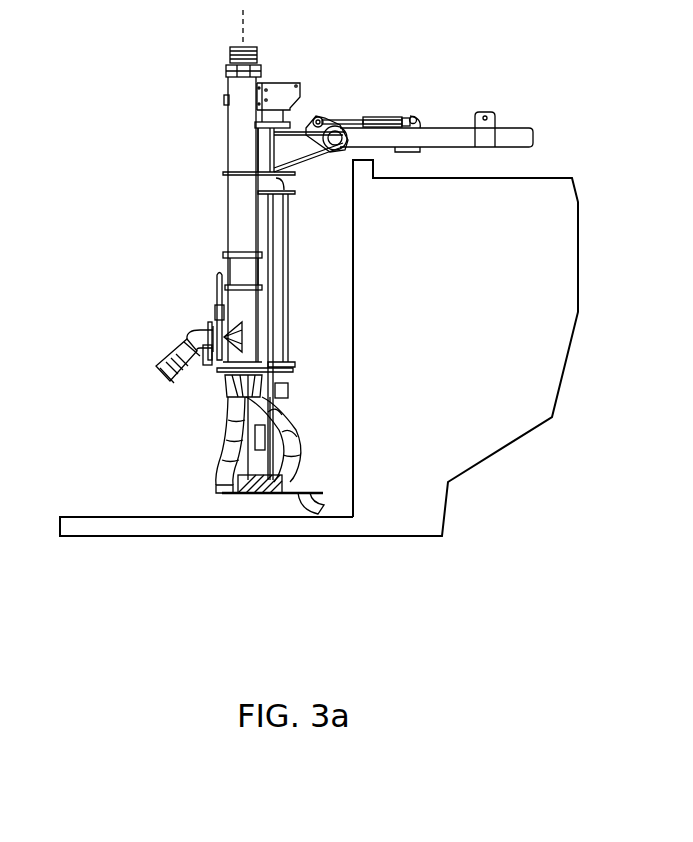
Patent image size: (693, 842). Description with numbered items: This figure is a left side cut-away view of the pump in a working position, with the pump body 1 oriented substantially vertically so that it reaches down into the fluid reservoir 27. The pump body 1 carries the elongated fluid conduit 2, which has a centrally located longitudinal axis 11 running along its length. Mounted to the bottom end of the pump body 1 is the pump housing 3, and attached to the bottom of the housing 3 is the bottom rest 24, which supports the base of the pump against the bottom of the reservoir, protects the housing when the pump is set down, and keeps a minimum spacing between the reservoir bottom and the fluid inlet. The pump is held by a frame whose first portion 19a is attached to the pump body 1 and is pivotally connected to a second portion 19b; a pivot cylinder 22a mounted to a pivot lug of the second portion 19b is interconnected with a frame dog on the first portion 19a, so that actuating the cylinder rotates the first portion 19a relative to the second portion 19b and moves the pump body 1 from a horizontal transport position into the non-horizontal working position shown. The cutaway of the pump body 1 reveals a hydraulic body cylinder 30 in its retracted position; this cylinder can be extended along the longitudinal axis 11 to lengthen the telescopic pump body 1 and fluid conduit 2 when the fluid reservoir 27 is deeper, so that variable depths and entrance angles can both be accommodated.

The longitudinal axis 11 is at (243, 40).
The elongated fluid conduit 2 is at (237, 160).
The pump body 1 is at (263, 263).
The first portion 19a is at (302, 128).
The pivot cylinder 22a is at (393, 118).
The second portion 19b is at (503, 135).
The fluid reservoir 27 is at (562, 243).
The hydraulic body cylinder 30 is at (287, 280).
The pump housing 3 is at (217, 474).
The bottom rest 24 is at (317, 505).